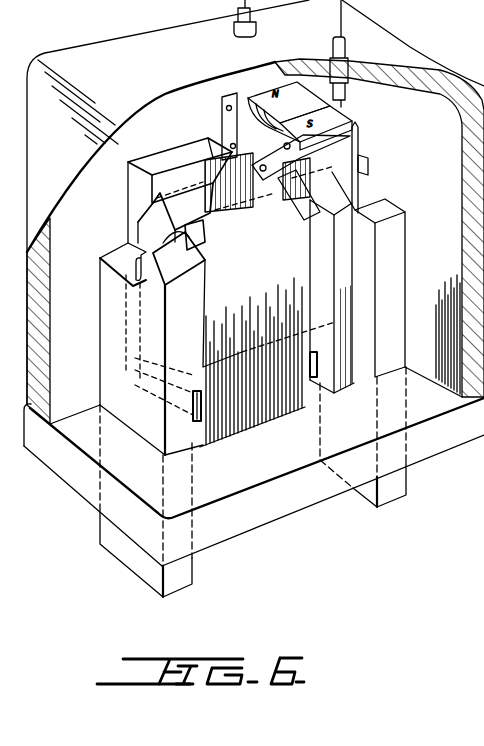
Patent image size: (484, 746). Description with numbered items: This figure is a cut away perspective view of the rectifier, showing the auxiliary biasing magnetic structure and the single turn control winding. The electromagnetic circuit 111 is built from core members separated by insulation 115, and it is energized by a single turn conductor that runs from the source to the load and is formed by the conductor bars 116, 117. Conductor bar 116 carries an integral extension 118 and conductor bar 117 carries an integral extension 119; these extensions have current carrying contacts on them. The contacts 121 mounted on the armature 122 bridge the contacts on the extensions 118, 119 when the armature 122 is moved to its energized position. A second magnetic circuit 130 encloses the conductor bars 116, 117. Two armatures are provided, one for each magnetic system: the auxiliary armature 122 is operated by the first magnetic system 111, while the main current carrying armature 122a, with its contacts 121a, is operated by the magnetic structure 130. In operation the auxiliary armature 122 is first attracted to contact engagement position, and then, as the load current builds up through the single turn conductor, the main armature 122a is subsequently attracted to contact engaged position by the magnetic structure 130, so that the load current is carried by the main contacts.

The electromagnetic circuit 111 is at (346, 400).
The insulation 115 is at (199, 422).
The conductor bar 116 is at (185, 572).
The conductor bar 117 is at (403, 484).
The integral extension 118 is at (191, 268).
The integral extension 119 is at (369, 163).
The contacts 121 is at (306, 202).
The contacts 121a is at (224, 212).
The armature 122 is at (322, 176).
The main armature 122a is at (215, 158).
The second magnetic circuit 130 is at (270, 434).